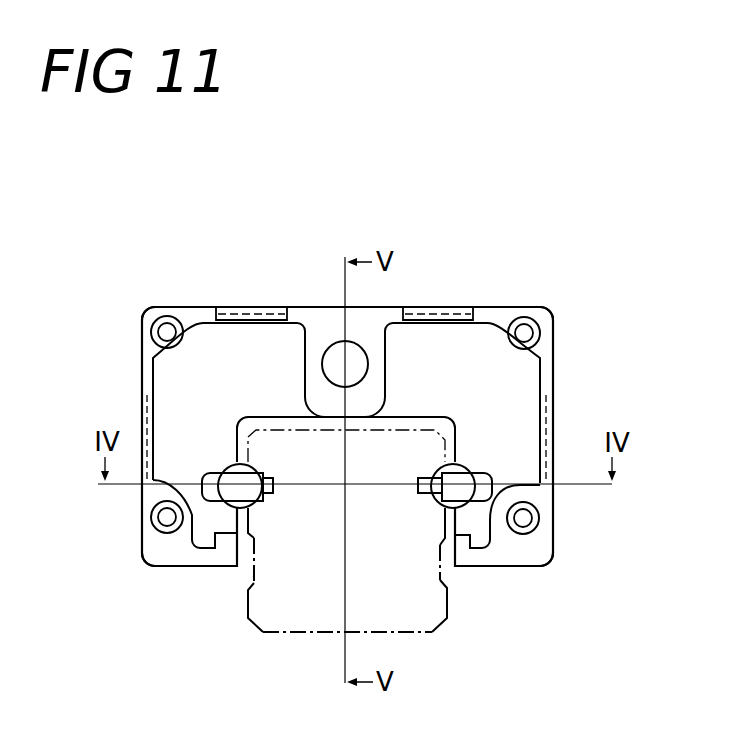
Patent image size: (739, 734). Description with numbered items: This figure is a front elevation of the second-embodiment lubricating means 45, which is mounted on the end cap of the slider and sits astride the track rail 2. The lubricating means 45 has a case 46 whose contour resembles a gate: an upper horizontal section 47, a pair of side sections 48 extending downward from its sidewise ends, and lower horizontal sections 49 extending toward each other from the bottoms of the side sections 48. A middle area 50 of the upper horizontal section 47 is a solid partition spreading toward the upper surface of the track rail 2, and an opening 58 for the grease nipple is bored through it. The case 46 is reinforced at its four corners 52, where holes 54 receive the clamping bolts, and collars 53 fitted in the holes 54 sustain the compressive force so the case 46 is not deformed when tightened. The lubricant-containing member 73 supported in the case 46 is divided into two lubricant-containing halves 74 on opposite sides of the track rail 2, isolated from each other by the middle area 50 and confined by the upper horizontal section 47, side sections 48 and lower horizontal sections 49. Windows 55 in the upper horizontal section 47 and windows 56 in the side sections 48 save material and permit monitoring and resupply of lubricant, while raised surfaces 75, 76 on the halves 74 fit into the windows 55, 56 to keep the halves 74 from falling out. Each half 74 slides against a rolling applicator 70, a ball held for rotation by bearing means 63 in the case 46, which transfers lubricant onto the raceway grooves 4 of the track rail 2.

The track rail 2 is at (328, 600).
The raceway grooves 4 is at (428, 508).
The lubricating means 45 is at (556, 306).
The case 46 is at (372, 310).
The upper horizontal section 47 is at (197, 315).
The side sections 48 is at (547, 393).
The lower horizontal sections 49 is at (490, 558).
The middle area 50 is at (312, 327).
The corners 52 is at (542, 558).
The collars 53 is at (535, 528).
The holes 54 is at (532, 515).
The windows 55 is at (438, 310).
The windows 56 is at (547, 433).
The opening 58 is at (337, 355).
The bearing means 63 is at (478, 520).
The rolling applicators 70 is at (445, 512).
The lubricant-containing member 73 is at (543, 404).
The lubricant-containing halves 74 is at (490, 402).
The raised surfaces 75 is at (455, 317).
The raised surfaces 76 is at (547, 462).